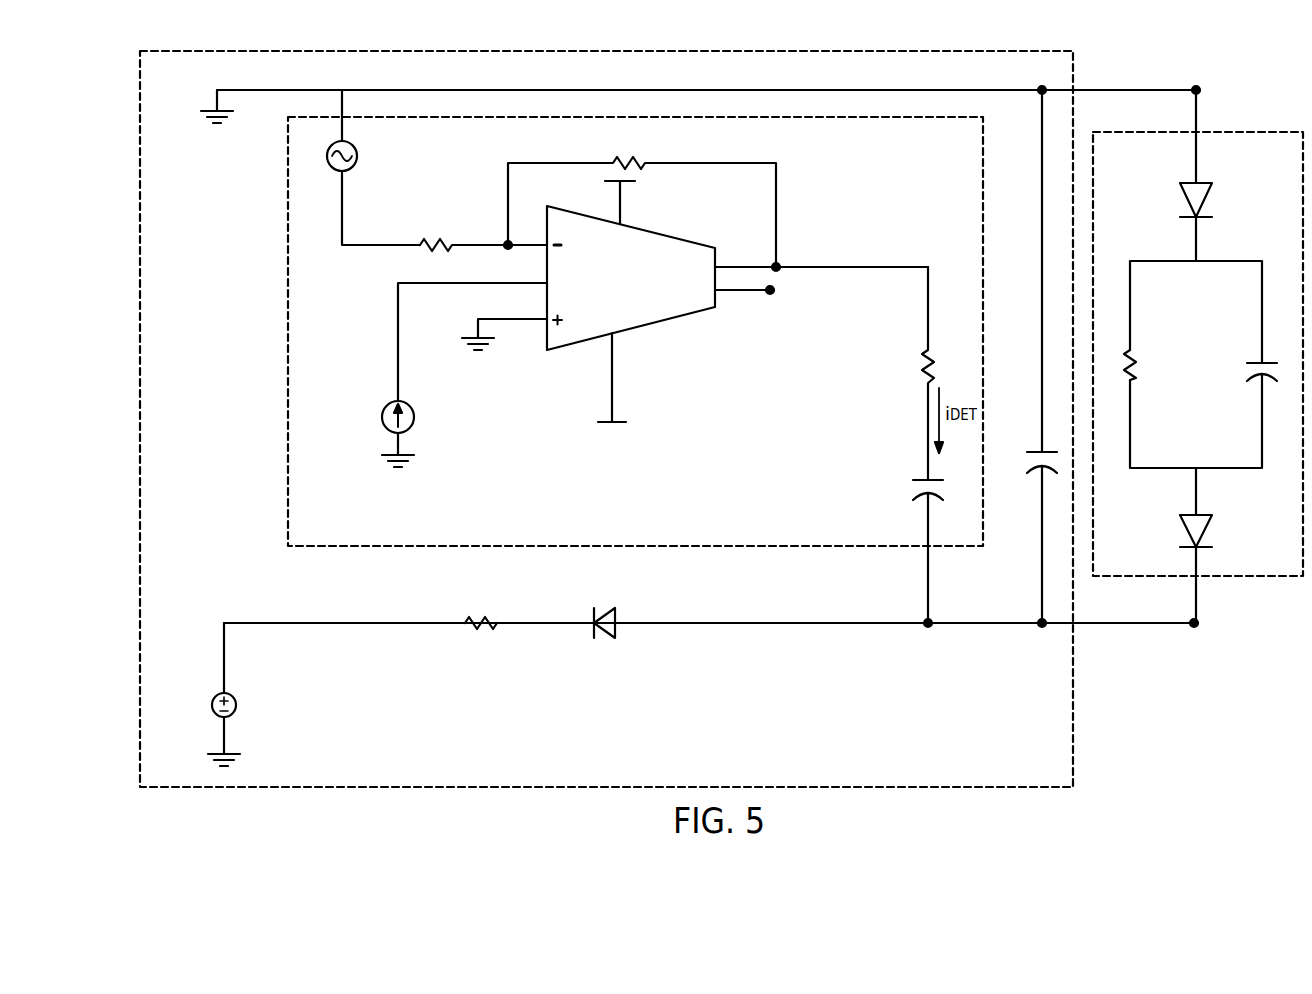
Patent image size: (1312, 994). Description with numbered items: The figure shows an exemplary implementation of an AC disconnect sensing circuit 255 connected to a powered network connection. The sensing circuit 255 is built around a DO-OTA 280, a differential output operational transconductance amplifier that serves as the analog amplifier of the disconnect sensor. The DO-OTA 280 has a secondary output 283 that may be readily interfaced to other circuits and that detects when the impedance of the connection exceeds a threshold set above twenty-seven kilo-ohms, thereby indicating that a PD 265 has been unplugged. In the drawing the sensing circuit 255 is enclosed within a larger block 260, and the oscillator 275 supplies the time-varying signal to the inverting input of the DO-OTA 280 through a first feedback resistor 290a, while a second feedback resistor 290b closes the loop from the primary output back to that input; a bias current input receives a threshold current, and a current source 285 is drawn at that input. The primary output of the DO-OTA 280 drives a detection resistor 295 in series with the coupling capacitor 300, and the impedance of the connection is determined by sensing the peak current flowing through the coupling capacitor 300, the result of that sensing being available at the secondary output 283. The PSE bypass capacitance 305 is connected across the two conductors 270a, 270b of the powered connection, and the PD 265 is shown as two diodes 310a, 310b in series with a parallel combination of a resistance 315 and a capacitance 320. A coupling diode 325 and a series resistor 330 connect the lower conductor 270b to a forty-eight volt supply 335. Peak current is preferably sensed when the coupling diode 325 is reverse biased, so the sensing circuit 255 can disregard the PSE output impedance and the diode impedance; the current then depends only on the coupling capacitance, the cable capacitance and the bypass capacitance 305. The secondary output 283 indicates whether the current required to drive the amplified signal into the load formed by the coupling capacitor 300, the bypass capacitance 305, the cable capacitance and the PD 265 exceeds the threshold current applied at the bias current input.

The AC disconnect sensing circuit 255 is at (292, 460).
The power sourcing equipment circuit 260 is at (142, 515).
The PD 265 is at (1248, 132).
The first conductor 270a is at (1137, 88).
The second conductor 270b is at (1133, 623).
The oscillator 275 is at (330, 172).
The DO-OTA 280 is at (582, 343).
The secondary output 283 is at (768, 297).
The bias current source 285 is at (415, 417).
The feedback resistor RF1 290a is at (423, 238).
The feedback resistor RF2 290b is at (613, 162).
The detection resistor RDET 295 is at (926, 355).
The coupling capacitor 300 is at (922, 478).
The PSE bypass capacitance 305 is at (1034, 451).
The first photodiode 310a is at (1187, 214).
The second photodiode 310b is at (1192, 546).
The photodiode resistance RPD 315 is at (1132, 353).
The photodiode capacitance CPD 320 is at (1255, 362).
The coupling diode 325 is at (592, 618).
The series resistor RS 330 is at (467, 615).
The 48 V power supply 335 is at (237, 707).